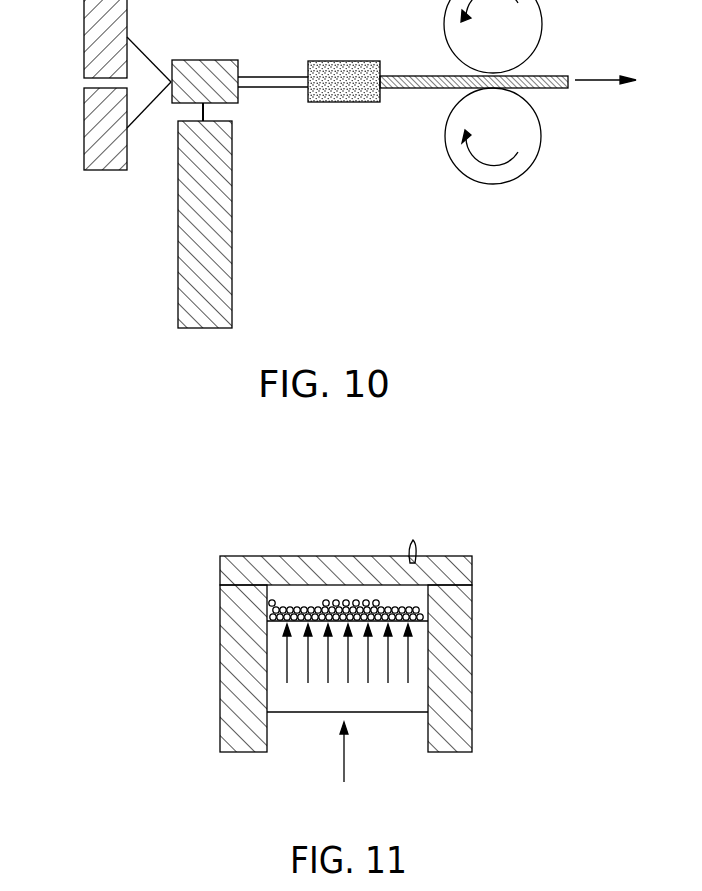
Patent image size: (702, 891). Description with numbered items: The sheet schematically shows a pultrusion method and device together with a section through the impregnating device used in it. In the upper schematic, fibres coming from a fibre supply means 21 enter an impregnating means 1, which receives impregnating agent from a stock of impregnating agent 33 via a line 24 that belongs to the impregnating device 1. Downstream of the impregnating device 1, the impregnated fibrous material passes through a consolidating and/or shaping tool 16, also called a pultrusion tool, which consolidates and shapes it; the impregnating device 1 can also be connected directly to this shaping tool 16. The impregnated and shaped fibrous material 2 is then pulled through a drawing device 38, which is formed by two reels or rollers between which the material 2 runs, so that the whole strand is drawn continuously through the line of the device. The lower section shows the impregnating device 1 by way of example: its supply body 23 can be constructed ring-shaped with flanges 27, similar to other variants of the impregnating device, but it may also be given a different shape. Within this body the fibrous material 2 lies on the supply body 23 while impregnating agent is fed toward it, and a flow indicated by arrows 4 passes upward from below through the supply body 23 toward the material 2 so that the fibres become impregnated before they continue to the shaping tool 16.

In FIG. 10, the impregnating means 1 is at (191, 75).
In FIG. 11, the impregnating means 1 is at (286, 593).
In FIG. 10, the impregnated and shaped fibrous material 2 is at (263, 76).
In FIG. 11, the impregnated and shaped fibrous material 2 is at (379, 604).
In FIG. 11, the gas flow 4 is at (344, 775).
In FIG. 10, the consolidating and/or shaping tool 16 is at (333, 61).
In FIG. 10, the fibre supply means 21 is at (87, 40).
In FIG. 11, the supply body 23 is at (387, 712).
In FIG. 10, the line 24 is at (206, 113).
In FIG. 11, the flanges 27 is at (220, 619).
In FIG. 10, the stock of impregnating agent 33 is at (223, 215).
In FIG. 10, the drawing device 38 is at (485, 178).